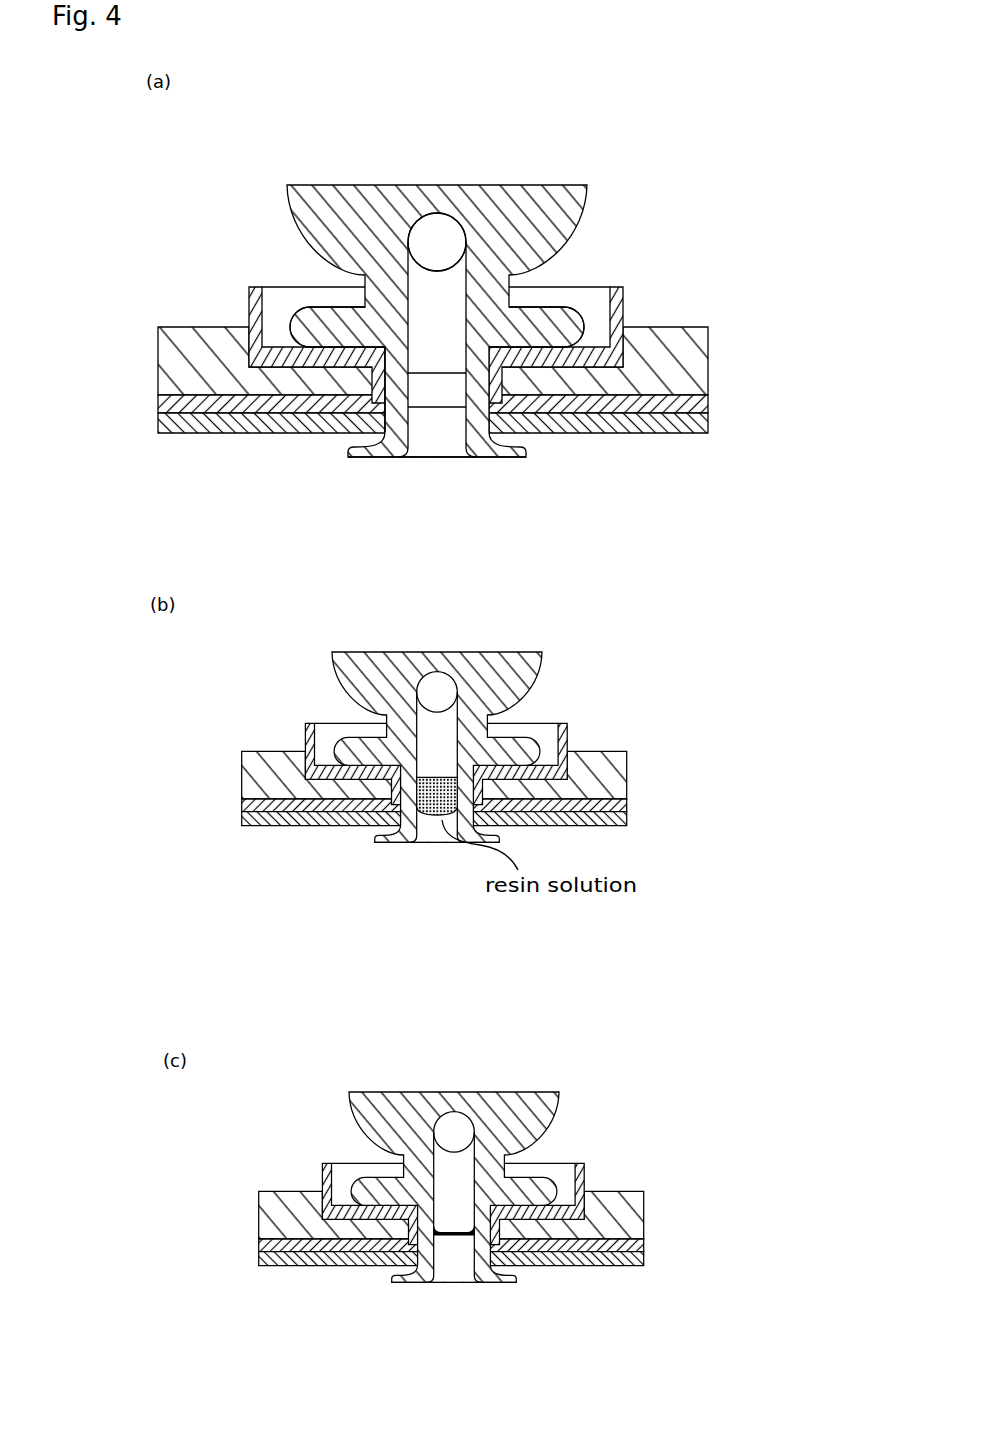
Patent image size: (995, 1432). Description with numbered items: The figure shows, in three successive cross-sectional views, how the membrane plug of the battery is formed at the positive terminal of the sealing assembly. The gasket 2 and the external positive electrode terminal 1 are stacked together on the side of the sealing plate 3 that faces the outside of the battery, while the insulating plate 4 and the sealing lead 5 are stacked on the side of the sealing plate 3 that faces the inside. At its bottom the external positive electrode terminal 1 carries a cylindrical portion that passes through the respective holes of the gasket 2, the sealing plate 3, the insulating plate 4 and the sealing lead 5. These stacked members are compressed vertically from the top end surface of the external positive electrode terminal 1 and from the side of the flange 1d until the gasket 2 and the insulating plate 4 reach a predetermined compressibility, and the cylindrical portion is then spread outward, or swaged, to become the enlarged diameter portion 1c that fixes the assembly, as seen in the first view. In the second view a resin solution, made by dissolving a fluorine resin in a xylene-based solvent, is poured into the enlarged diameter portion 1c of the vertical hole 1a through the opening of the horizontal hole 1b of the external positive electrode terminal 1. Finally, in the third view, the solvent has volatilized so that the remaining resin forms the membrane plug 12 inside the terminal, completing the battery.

The external positive electrode terminal 1 is at (550, 238).
The vertical hole 1a is at (453, 342).
The horizontal hole 1b is at (443, 238).
The enlarged diameter portion 1c is at (385, 388).
The flange 1d is at (315, 322).
The gasket 2 is at (623, 298).
The sealing plate 3 is at (690, 340).
The insulating plate 4 is at (708, 403).
The sealing lead 5 is at (585, 425).
The membrane plug 12 is at (452, 1238).